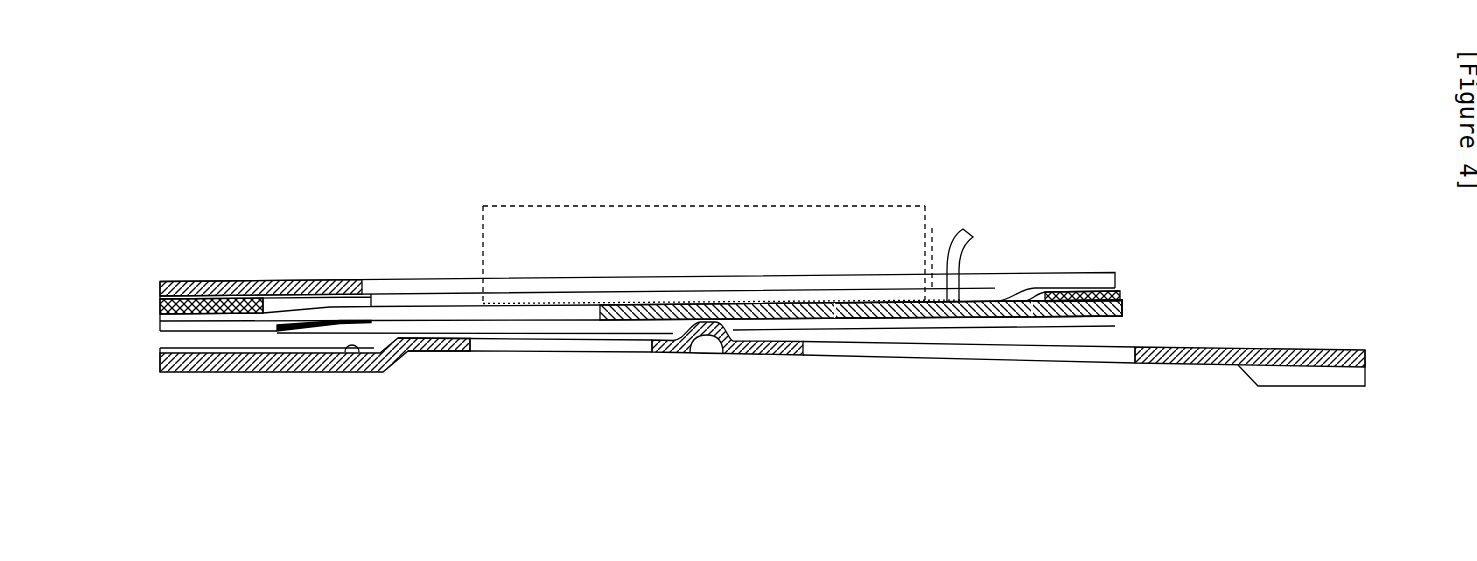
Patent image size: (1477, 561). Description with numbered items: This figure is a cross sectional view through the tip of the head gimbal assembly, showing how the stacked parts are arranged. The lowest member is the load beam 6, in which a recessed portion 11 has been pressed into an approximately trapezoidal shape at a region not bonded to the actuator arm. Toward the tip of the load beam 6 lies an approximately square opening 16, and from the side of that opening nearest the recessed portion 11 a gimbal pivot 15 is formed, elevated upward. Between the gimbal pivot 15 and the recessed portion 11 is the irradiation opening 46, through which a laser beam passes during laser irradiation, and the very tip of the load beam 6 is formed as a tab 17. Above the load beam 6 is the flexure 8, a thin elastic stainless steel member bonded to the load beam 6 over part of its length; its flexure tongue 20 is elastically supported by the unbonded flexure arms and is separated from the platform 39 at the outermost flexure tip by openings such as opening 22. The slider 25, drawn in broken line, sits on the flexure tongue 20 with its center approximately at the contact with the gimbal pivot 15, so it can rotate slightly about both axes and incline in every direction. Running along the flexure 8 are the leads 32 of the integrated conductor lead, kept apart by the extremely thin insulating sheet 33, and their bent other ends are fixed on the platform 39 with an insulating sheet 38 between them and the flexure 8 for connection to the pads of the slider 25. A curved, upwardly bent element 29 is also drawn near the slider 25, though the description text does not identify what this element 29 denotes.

The load beam 6 is at (447, 350).
The flexure 8 is at (277, 320).
The recessed portion 11 is at (342, 353).
The gimbal pivot 15 is at (708, 335).
The opening 16 is at (1060, 350).
The tab 17 is at (1303, 375).
The flexure tongue 20 is at (770, 322).
The opening 22 is at (1023, 318).
The slider 25 is at (698, 223).
The flexible hook tab 29 is at (935, 227).
The leads 32 is at (323, 282).
The insulating sheet 33 is at (205, 284).
The insulating sheet 38 is at (1122, 290).
The platform 39 is at (1122, 312).
The irradiation opening 46 is at (570, 348).